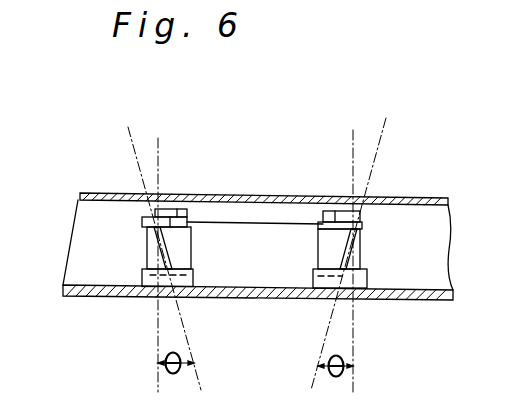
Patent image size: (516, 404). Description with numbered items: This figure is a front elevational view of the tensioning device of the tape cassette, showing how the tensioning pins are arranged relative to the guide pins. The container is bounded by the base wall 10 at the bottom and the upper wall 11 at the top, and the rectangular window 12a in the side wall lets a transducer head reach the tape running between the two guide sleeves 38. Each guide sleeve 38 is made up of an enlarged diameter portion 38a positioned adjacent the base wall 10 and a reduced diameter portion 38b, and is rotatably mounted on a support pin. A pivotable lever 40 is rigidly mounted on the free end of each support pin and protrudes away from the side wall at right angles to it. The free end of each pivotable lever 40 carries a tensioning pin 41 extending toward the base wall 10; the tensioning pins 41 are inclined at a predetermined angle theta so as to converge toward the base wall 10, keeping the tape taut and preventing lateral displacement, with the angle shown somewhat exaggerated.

The base wall 10 is at (263, 298).
The upper wall 11 is at (232, 195).
The rectangular window 12a is at (288, 223).
The guide sleeve 38 is at (102, 193).
The enlarged diameter portion 38a is at (142, 270).
The reduced diameter portion 38b is at (146, 239).
The pivotable lever 40 is at (127, 194).
The tensioning pin 41 is at (166, 270).